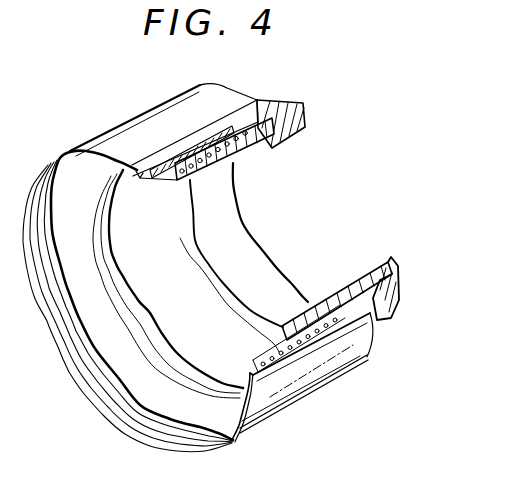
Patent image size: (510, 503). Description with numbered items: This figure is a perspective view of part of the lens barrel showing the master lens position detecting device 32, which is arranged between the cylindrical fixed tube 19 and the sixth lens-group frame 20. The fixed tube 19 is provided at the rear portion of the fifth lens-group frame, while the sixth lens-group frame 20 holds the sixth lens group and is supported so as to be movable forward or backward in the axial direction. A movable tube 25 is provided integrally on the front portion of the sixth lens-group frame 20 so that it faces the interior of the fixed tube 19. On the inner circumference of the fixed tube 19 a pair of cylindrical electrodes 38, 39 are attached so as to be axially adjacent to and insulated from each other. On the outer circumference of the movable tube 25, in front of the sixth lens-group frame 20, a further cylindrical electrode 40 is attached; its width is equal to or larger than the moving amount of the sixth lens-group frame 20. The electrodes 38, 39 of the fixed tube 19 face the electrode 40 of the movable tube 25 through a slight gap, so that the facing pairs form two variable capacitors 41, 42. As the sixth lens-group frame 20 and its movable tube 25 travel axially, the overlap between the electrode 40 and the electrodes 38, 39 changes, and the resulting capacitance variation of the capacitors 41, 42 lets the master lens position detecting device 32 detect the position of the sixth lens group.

The fixed tube 19 is at (104, 152).
The sixth lens-group frame 20 is at (307, 111).
The movable tube 25 is at (207, 165).
The master lens position detecting device 32 is at (362, 315).
The cylindrical electrode 38 is at (183, 156).
The cylindrical electrode 39 is at (238, 134).
The cylindrical electrode 40 is at (238, 150).
The variable capacitor 41 is at (320, 339).
The variable capacitor 42 is at (368, 327).